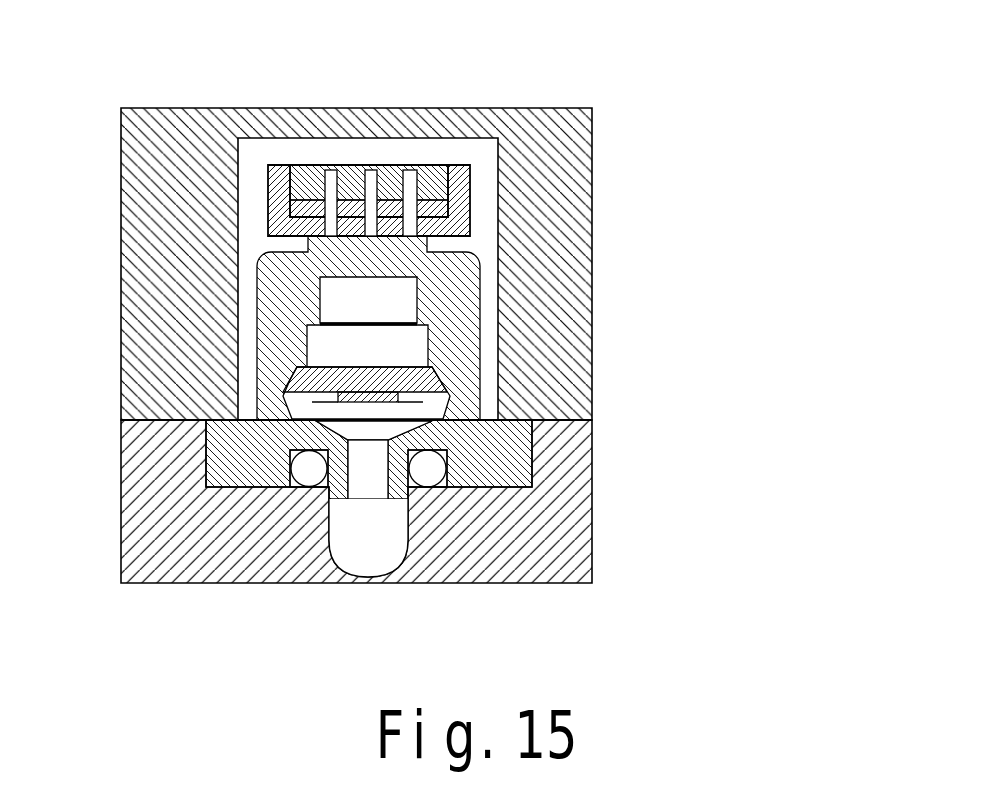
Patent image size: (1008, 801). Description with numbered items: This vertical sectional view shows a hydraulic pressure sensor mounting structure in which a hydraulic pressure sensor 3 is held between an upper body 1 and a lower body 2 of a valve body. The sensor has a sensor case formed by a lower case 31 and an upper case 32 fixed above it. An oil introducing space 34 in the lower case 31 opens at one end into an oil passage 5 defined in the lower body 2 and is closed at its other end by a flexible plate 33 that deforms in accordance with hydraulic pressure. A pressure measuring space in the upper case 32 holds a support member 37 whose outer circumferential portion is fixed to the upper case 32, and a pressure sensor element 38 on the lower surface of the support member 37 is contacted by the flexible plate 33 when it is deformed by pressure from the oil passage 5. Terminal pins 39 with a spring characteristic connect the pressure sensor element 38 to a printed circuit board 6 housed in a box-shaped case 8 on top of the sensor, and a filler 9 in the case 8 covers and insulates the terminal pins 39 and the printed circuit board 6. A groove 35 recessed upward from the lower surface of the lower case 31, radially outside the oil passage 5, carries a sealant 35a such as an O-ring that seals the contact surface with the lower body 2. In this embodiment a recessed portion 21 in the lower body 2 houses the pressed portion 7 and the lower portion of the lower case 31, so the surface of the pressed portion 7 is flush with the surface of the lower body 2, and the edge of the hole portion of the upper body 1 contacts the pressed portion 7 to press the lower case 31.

The upper body 1 is at (557, 155).
The lower body 2 is at (580, 567).
The hydraulic pressure sensor 3 is at (368, 340).
The oil passage 5 is at (383, 545).
The printed circuit board 6 is at (300, 210).
The pressed portion 7 is at (220, 419).
The case 8 is at (470, 172).
The filler 9 is at (437, 178).
The recessed portion 21 is at (533, 437).
The lower case 31 is at (518, 464).
The upper case 32 is at (482, 275).
The flexible plate 33 is at (393, 424).
The oil introducing space 34 is at (370, 483).
The groove 35 is at (446, 474).
The sealant 35a is at (303, 478).
The support member 37 is at (435, 390).
The pressure sensor element 38 is at (357, 397).
The terminal pins 39 is at (407, 188).